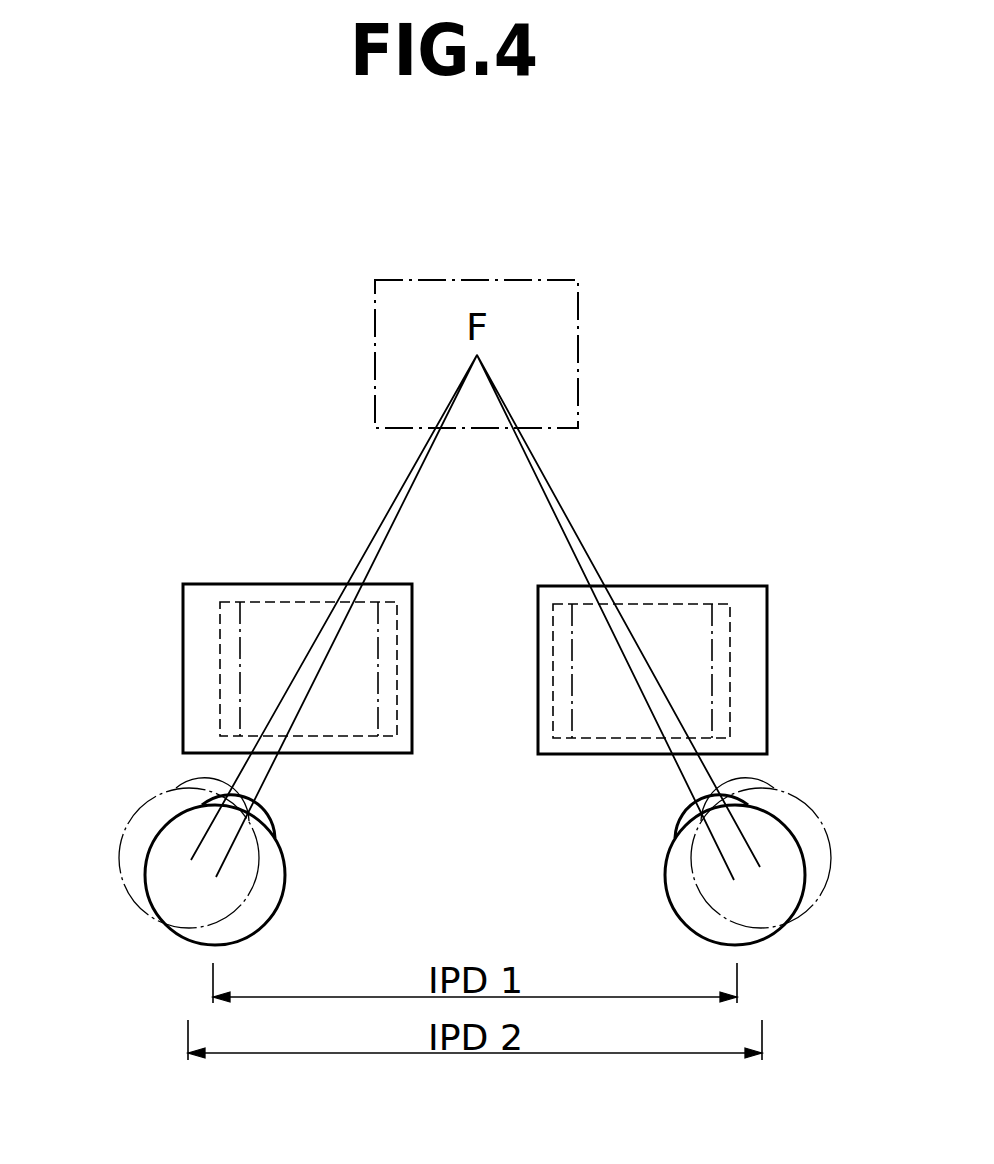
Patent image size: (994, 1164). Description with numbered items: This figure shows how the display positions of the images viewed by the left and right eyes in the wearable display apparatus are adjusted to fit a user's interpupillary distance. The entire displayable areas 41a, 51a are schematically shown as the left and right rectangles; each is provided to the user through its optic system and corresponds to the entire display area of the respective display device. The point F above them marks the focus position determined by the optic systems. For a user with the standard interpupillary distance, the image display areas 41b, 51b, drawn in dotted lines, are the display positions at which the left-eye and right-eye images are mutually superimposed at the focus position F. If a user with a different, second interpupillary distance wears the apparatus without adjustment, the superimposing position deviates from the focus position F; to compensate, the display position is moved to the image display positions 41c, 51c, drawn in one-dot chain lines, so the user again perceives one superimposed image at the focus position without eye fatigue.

The entire displayable area 41a is at (183, 667).
The image display area 41b is at (378, 672).
The image display position 41c is at (397, 707).
The entire displayable area 51a is at (767, 672).
The image display area 51b is at (730, 720).
The image display position 51c is at (710, 638).